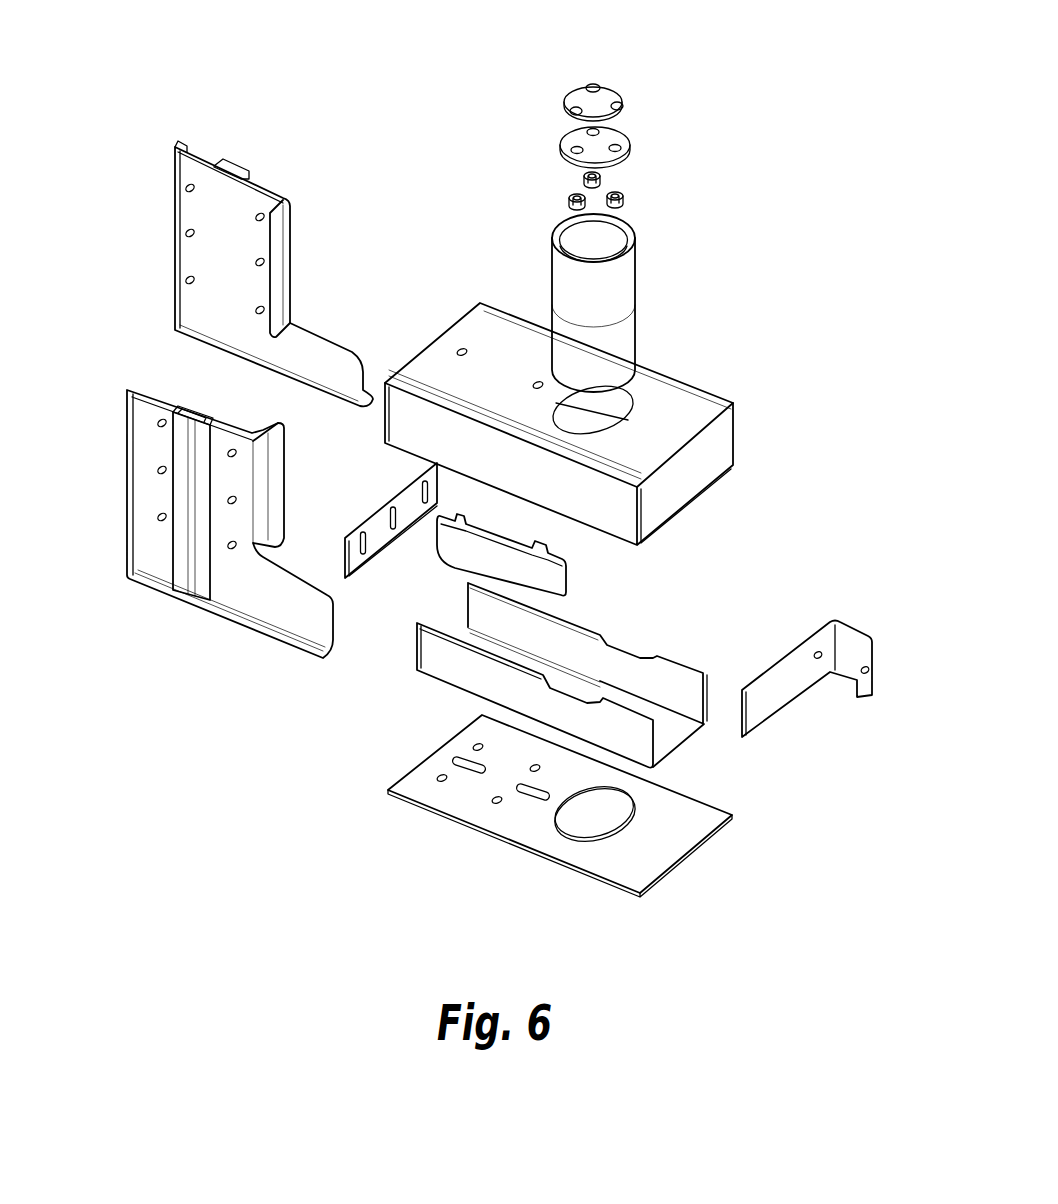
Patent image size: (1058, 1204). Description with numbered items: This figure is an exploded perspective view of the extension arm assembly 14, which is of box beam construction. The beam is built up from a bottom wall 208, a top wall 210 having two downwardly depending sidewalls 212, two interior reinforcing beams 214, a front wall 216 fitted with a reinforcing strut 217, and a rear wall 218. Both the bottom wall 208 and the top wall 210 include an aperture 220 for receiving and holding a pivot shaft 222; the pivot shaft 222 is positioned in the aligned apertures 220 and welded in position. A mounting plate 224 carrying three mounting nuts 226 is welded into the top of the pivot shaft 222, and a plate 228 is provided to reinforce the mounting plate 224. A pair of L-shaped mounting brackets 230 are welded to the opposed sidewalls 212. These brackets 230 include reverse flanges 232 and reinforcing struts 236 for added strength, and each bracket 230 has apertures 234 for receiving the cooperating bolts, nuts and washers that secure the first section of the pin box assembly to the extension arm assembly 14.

The extension arm assembly 14 is at (858, 202).
The bottom wall 208 is at (670, 835).
The top wall 210 is at (700, 408).
The sidewalls 212 is at (740, 425).
The interior reinforcing beams 214 is at (697, 678).
The front wall 216 is at (408, 500).
The reinforcing strut 217 is at (560, 553).
The rear wall 218 is at (767, 700).
The aperture 220 is at (613, 390).
The pivot shaft 222 is at (618, 294).
The mounting plate 224 is at (617, 137).
The mounting nuts 226 is at (623, 197).
The plate 228 is at (605, 87).
The L-shaped mounting brackets 230 is at (263, 182).
The reverse flanges 232 is at (283, 258).
The apertures 234 is at (256, 262).
The reinforcing struts 236 is at (180, 562).